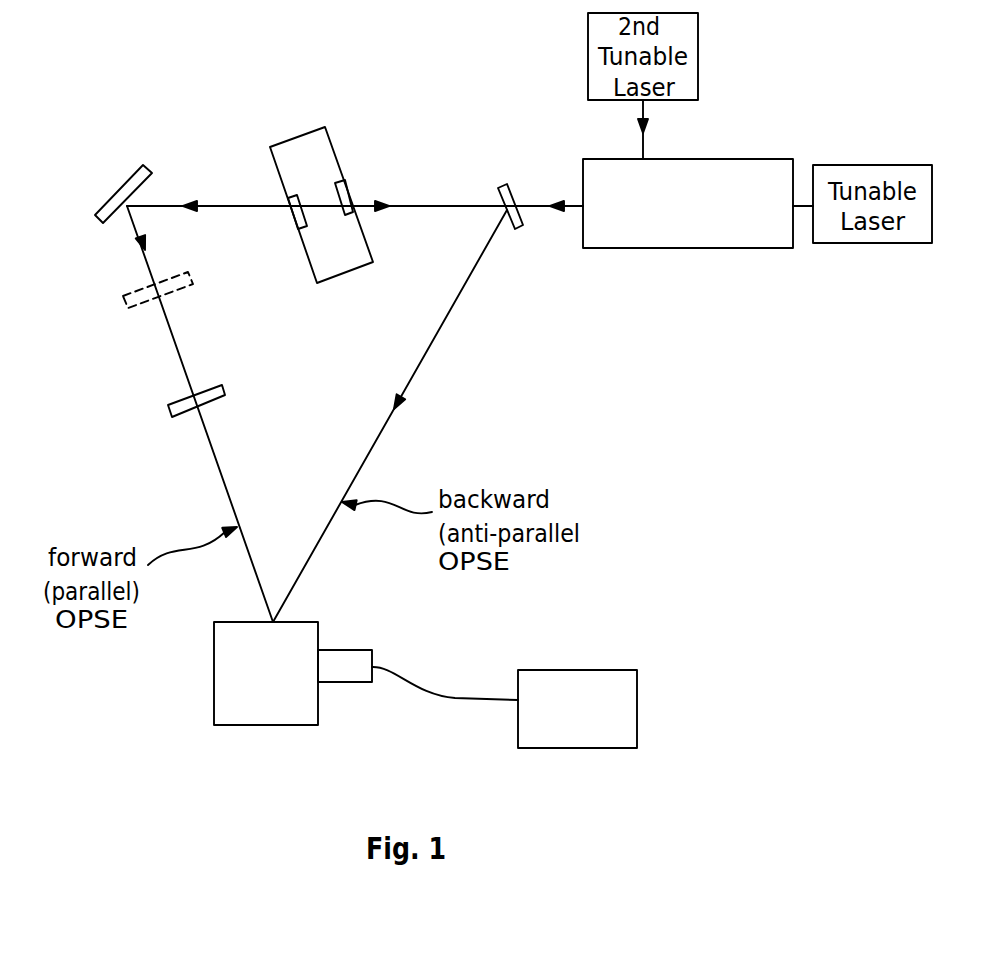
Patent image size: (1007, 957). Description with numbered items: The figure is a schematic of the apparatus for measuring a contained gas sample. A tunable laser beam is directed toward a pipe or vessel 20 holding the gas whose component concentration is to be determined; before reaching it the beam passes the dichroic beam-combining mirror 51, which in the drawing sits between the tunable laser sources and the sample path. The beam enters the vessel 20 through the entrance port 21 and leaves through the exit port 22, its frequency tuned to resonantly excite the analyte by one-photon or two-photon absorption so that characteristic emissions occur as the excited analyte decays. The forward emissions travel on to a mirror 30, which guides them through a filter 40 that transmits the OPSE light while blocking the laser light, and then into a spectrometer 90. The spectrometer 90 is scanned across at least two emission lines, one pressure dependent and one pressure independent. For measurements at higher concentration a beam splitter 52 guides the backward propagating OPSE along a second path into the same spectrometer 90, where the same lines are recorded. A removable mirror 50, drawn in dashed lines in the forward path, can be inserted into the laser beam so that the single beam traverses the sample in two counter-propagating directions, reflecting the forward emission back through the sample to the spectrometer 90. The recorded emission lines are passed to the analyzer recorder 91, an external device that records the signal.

The pipe or vessel 20 is at (349, 268).
The entrance port 21 is at (348, 198).
The exit port 22 is at (283, 208).
The mirror 30 is at (115, 190).
The filter 40 is at (185, 415).
The removable mirror 50 is at (140, 308).
The dichroic beam-combining mirror 51 is at (653, 249).
The beam splitter 52 is at (517, 230).
The spectrometer 90 is at (313, 715).
The analyzer recorder 91 is at (637, 713).